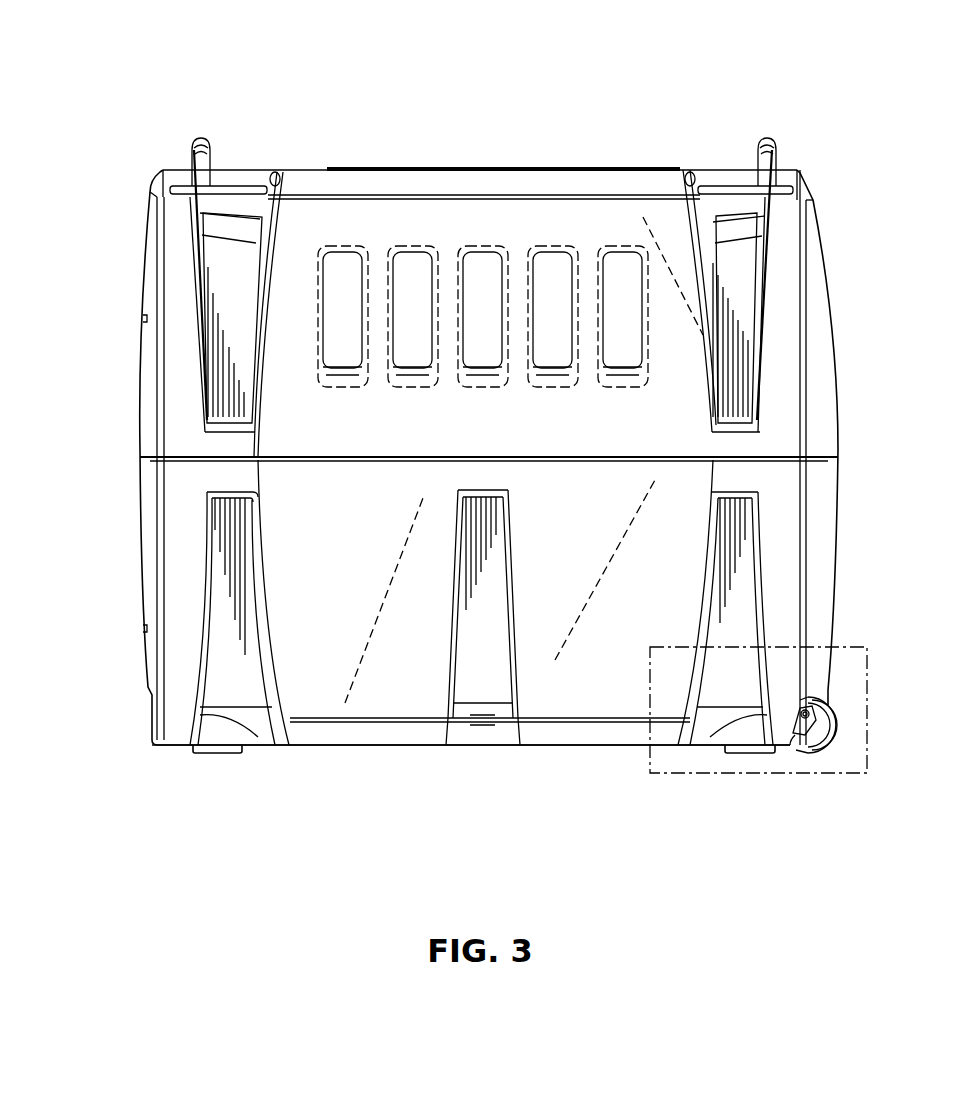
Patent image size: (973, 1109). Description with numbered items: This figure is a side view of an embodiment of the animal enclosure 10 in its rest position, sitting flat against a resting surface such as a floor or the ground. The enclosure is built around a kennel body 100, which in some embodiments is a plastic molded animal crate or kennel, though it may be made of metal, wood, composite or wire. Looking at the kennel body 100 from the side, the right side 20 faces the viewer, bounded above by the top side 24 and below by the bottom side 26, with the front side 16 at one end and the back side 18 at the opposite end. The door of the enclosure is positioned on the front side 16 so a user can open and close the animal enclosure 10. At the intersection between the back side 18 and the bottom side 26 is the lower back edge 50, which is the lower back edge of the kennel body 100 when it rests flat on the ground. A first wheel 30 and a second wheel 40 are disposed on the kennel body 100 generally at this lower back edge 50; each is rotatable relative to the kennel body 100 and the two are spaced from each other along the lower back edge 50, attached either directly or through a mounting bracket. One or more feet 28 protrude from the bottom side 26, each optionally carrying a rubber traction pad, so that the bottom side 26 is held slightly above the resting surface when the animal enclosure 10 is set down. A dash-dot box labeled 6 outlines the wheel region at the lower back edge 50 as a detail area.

The animal enclosure 10 is at (858, 118).
The kennel body 100 is at (302, 182).
The top side 24 is at (434, 169).
The front side 16 is at (138, 538).
The back side 18 is at (835, 415).
The right side 20 is at (360, 545).
The bottom side 26 is at (360, 748).
The foot 28 is at (742, 753).
The lower back edge 50 is at (788, 757).
The first wheel 30 is at (826, 742).
The second wheel 40 is at (873, 761).
The detail region of FIG. 6 is at (870, 717).